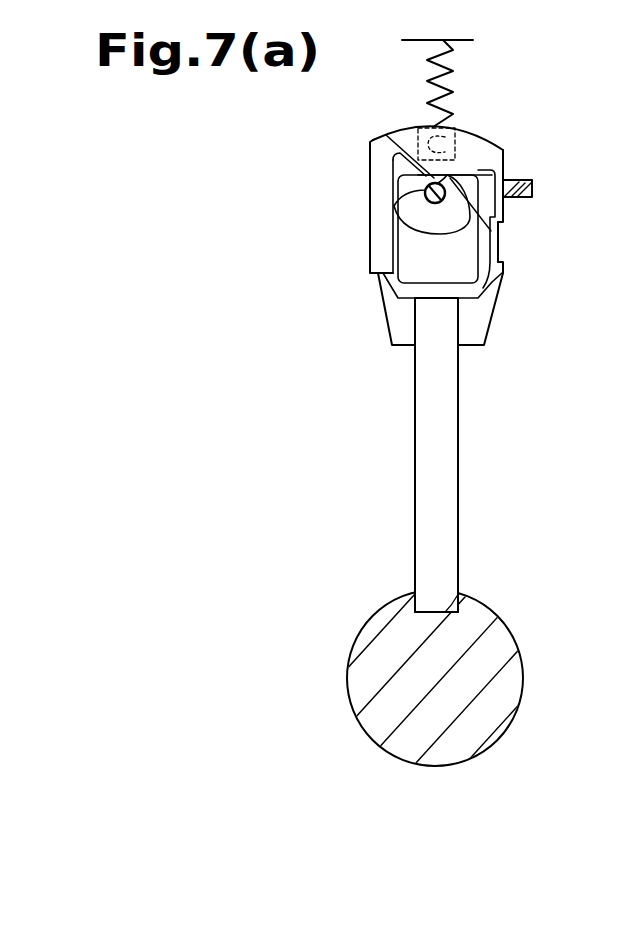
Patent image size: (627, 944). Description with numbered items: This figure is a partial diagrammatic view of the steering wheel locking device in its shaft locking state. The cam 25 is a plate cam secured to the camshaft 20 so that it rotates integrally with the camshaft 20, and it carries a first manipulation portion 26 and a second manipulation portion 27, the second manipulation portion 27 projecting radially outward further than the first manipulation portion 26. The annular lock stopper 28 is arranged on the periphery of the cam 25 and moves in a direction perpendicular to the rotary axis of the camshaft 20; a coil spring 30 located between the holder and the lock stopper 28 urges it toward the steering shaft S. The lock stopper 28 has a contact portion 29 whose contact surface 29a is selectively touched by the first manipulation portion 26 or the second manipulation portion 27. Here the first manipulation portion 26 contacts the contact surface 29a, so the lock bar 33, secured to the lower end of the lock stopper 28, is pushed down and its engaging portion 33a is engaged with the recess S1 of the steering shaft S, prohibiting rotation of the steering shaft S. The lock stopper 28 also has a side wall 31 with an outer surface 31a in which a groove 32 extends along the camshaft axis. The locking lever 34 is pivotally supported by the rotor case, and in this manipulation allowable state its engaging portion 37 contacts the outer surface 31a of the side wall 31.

The camshaft 20 is at (393, 207).
The cam 25 is at (431, 237).
The first manipulation portion 26 is at (480, 128).
The second manipulation portion 27 is at (375, 141).
The lock stopper 28 is at (380, 317).
The contact portion 29 is at (392, 178).
The contact surface 29a is at (503, 238).
The coil spring 30 is at (427, 77).
The side wall 31 is at (503, 204).
The outer surface 31a is at (500, 221).
The groove 32 is at (503, 264).
The lock bar 33 is at (459, 417).
The engaging portion 33a is at (421, 598).
The locking lever 34 is at (532, 182).
The engaging portion 37 is at (514, 180).
The steering shaft S is at (375, 605).
The recess S1 is at (462, 592).